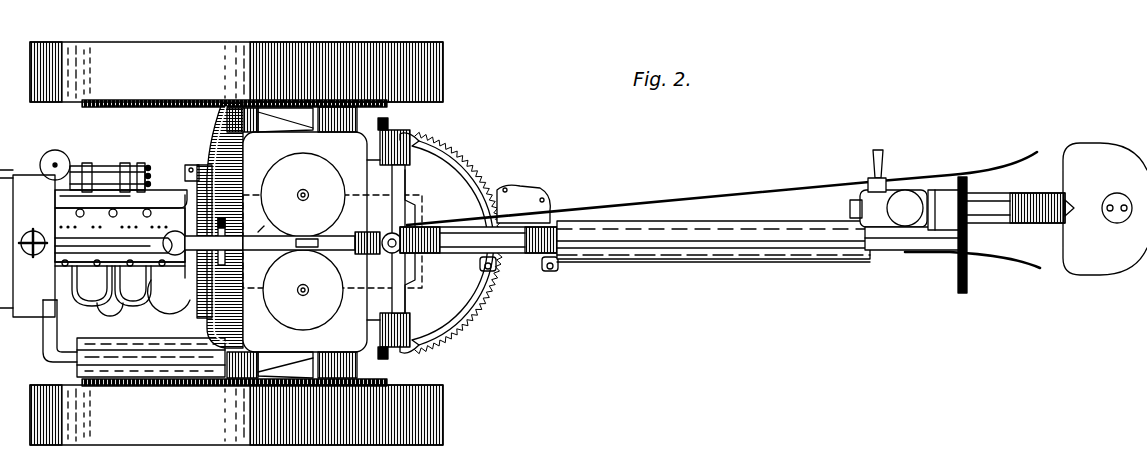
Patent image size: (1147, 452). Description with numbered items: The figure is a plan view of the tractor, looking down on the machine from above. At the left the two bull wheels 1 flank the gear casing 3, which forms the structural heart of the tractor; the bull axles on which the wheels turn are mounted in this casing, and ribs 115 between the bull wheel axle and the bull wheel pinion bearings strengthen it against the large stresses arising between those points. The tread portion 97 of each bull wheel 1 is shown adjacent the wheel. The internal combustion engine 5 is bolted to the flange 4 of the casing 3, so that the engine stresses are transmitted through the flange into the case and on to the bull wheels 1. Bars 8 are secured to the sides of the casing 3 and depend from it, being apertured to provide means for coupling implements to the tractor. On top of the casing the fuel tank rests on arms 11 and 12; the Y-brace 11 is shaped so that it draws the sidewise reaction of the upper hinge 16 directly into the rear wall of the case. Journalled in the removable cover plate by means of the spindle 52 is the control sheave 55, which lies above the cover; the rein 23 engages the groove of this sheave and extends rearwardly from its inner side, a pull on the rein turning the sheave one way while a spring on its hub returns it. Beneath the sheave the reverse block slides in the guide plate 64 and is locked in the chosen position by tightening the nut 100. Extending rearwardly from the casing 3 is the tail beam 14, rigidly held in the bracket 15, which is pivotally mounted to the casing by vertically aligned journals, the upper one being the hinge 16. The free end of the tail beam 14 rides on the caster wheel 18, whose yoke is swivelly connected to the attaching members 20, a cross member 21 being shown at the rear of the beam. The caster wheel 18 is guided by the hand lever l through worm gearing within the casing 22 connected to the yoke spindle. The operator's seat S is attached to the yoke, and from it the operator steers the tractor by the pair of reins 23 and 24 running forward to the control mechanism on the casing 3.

The bull wheel 1 is at (236, 243).
The track tread 97 is at (143, 107).
The gear casing 3 is at (305, 242).
The flange 4 is at (196, 200).
The internal combustion engine 5 is at (121, 200).
The bars 8 is at (394, 116).
The Y-brace 11 is at (372, 257).
The arm 12 is at (226, 213).
The tail beam 14 is at (712, 232).
The bracket 15 is at (478, 240).
The journal 16 is at (416, 222).
The caster wheel 18 is at (1020, 192).
The attaching members 20 is at (928, 252).
The cross bar 21 is at (968, 283).
The casing 22 is at (905, 200).
The rein 23 is at (795, 179).
The rein 24 is at (803, 262).
The spindle 52 is at (301, 200).
The control sheave 55 is at (303, 241).
The guide plate 64 is at (255, 221).
The nut 100 is at (308, 232).
The ribs 115 is at (284, 112).
The operator's seat S is at (1105, 209).
The hand lever l is at (877, 155).